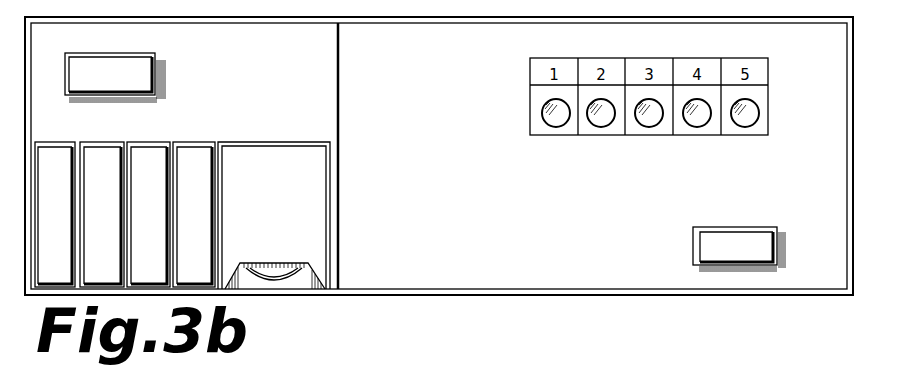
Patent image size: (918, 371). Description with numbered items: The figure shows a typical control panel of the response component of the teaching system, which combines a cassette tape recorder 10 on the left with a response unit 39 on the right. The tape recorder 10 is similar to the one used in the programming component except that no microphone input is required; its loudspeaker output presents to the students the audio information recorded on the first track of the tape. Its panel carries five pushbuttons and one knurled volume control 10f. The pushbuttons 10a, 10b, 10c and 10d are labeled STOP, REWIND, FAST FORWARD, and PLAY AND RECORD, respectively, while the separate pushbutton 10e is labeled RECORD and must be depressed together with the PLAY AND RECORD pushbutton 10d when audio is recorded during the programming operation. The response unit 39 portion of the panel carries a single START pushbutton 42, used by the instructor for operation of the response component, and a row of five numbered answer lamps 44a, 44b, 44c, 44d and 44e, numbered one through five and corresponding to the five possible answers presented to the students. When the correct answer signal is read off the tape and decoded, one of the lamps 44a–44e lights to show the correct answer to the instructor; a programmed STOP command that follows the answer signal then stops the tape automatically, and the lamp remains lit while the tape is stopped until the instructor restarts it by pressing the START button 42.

The cassette tape recorder 10 is at (288, 70).
The STOP pushbutton 10a is at (50, 147).
The REWIND pushbutton 10b is at (99, 147).
The FAST FORWARD pushbutton 10c is at (145, 149).
The PLAY AND RECORD pushbutton 10d is at (196, 149).
The RECORD pushbutton 10e is at (150, 62).
The knurled volume control 10f is at (278, 274).
The response unit 39 is at (407, 71).
The START pushbutton 42 is at (693, 235).
The answer lamp 44a is at (540, 133).
The answer lamp 44b is at (600, 133).
The answer lamp 44c is at (649, 135).
The answer lamp 44d is at (709, 135).
The answer lamp 44e is at (756, 135).